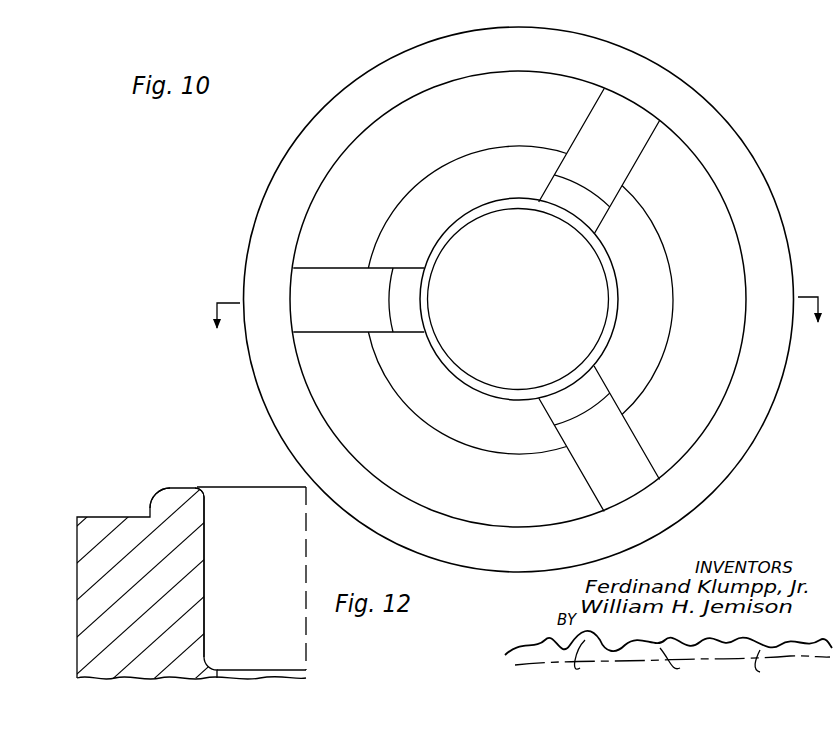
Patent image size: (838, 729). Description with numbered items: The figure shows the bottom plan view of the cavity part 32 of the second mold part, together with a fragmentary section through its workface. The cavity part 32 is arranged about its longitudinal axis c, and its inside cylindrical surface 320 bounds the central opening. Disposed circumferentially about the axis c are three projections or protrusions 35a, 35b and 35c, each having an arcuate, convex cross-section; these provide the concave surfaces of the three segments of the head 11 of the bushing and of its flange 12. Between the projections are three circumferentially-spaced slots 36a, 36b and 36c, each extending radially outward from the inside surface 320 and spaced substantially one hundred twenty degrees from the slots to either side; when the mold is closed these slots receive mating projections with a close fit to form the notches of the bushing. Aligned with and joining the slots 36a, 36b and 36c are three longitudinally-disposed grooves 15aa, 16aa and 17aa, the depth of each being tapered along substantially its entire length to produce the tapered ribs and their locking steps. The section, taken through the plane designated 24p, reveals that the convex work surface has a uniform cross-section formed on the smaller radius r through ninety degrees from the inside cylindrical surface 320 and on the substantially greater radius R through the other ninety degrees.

In FIG. 10, the cavity part 32 is at (268, 177).
In FIG. 12, the cavity part 32 is at (72, 655).
In FIG. 10, the inside surface 320 is at (452, 231).
In FIG. 12, the inside surface 320 is at (212, 534).
In FIG. 10, the flange 12 is at (511, 307).
In FIG. 12, the flange 12 is at (326, 498).
In FIG. 10, the projection 35a is at (637, 278).
In FIG. 10, the projection 35b is at (438, 180).
In FIG. 10, the projection 35c is at (474, 416).
In FIG. 12, the projection 35c is at (258, 487).
In FIG. 10, the longitudinally-disposed groove 15aa is at (580, 193).
In FIG. 10, the longitudinally-disposed groove 16aa is at (394, 296).
In FIG. 10, the longitudinally-disposed groove 17aa is at (576, 402).
In FIG. 10, the slot 36a is at (638, 146).
In FIG. 10, the slot 36b is at (328, 330).
In FIG. 10, the slot 36c is at (640, 448).
In FIG. 10, the head 11 is at (518, 326).
In FIG. 12, the plane 24p is at (74, 517).
In FIG. 12, the longitudinal axis c is at (306, 672).
In FIG. 12, the radius R is at (158, 491).
In FIG. 12, the radius r is at (213, 476).